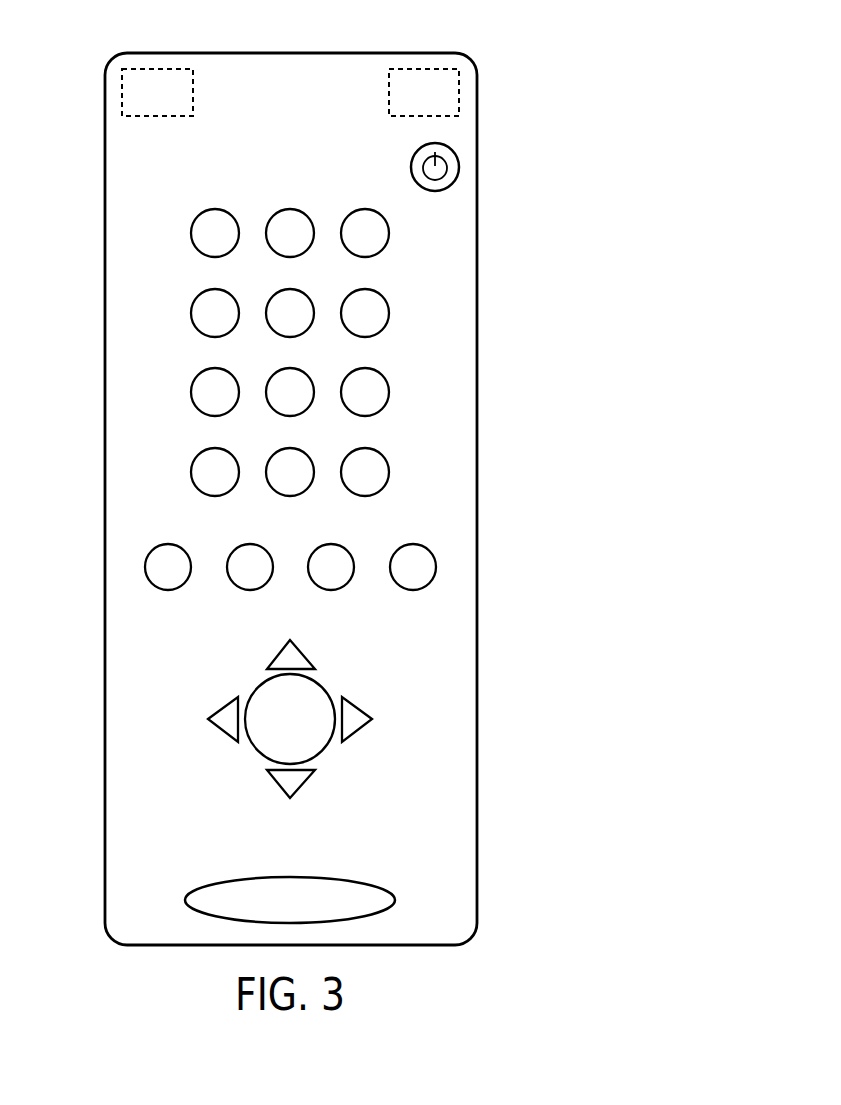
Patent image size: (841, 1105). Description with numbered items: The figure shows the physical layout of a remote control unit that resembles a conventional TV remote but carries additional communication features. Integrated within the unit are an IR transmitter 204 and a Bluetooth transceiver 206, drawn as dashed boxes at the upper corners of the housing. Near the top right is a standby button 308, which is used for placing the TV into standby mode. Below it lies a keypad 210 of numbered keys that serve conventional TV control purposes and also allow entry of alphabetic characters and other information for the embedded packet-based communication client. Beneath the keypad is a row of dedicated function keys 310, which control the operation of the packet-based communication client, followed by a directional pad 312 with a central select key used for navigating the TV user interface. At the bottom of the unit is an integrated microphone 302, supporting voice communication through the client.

The IR transmitter 204 is at (459, 80).
The Bluetooth transceiver 206 is at (122, 80).
The keypad 210 is at (400, 212).
The microphone 302 is at (288, 877).
The standby button 308 is at (459, 167).
The dedicated function keys 310 is at (450, 544).
The directional pad 312 is at (384, 640).